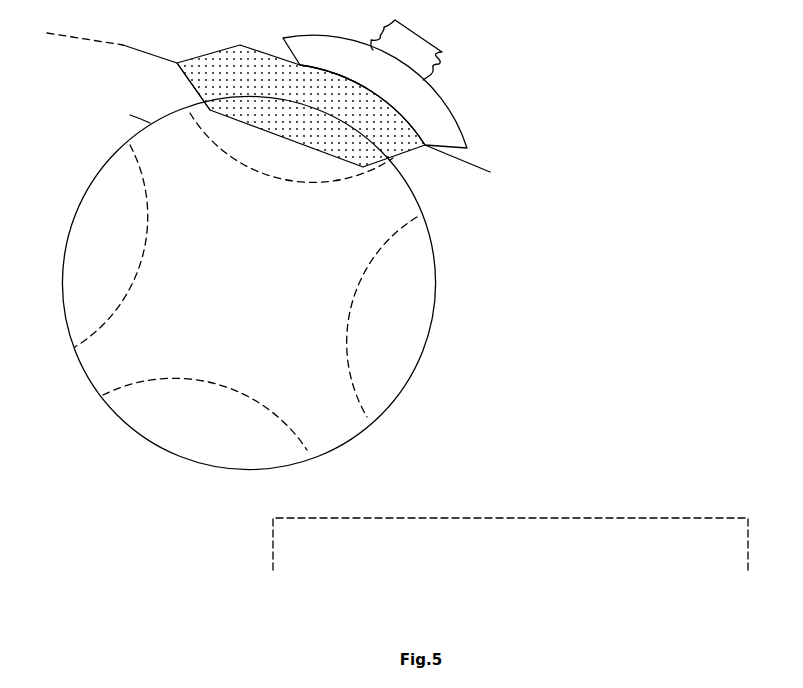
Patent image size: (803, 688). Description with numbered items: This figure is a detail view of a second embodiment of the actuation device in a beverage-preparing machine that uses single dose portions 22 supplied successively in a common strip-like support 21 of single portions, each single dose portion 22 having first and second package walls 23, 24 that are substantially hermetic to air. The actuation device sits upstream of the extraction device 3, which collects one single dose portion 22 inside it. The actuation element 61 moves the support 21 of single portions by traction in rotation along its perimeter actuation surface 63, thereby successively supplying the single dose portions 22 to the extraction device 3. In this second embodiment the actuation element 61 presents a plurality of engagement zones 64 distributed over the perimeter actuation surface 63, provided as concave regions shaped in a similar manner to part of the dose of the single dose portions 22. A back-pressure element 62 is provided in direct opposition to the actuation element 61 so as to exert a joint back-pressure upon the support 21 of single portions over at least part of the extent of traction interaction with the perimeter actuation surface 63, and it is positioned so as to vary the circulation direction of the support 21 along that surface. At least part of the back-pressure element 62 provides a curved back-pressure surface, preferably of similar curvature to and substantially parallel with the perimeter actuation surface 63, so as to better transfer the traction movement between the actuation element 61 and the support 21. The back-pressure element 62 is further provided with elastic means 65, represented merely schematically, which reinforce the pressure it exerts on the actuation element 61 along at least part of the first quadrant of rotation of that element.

The extraction device 3 is at (510, 544).
The support of single portions 21 is at (85, 31).
The single dose portion 22 is at (166, 71).
The first package wall 23 is at (276, 134).
The second package wall 24 is at (301, 95).
The actuation element 61 is at (248, 282).
The back-pressure element 62 is at (386, 96).
The perimeter actuation surface 63 is at (139, 129).
The engagement zones 64 is at (141, 208).
The elastic means 65 is at (414, 50).